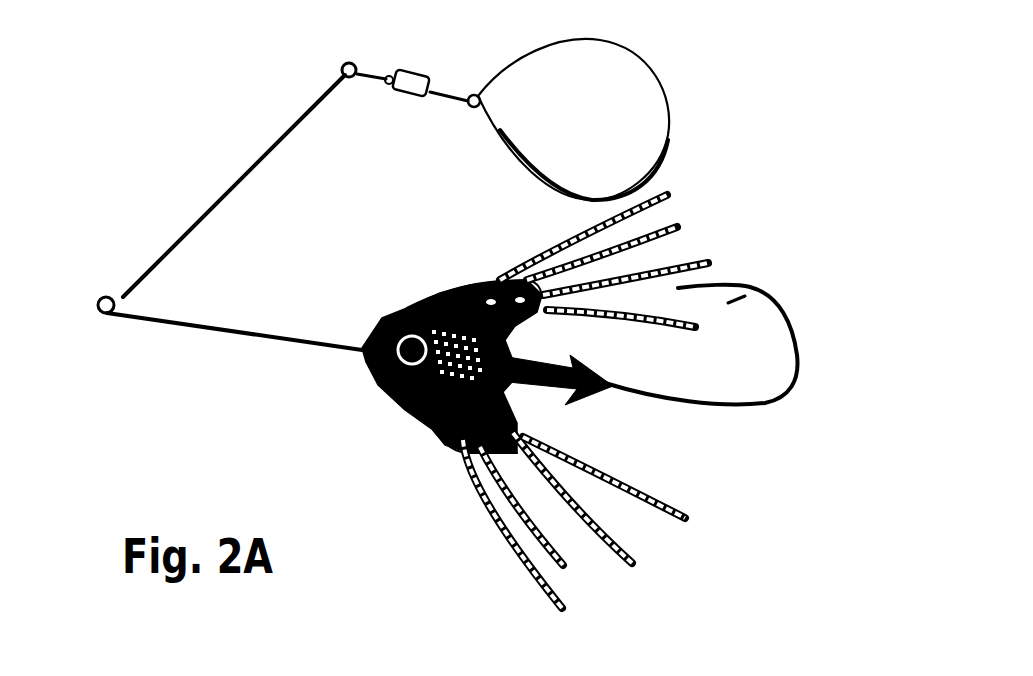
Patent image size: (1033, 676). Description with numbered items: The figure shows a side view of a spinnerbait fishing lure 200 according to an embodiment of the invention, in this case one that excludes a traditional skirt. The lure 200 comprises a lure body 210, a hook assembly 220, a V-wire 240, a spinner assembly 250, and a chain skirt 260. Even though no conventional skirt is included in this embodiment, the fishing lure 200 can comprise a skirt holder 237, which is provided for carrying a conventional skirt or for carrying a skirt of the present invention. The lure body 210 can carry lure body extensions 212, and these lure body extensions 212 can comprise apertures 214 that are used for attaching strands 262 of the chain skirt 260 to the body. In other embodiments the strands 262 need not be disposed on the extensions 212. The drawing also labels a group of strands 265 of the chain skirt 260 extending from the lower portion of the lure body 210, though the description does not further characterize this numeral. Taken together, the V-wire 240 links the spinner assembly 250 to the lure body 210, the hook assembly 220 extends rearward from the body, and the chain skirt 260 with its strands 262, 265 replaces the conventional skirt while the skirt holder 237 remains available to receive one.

The spinnerbait fishing lure 200 is at (46, 42).
The lure body 210 is at (392, 300).
The lure body extensions 212 is at (480, 288).
The apertures 214 is at (440, 430).
The hook assembly 220 is at (740, 297).
The skirt holder 237 is at (537, 390).
The V-wire 240 is at (237, 173).
The spinner assembly 250 is at (400, 140).
The chain skirt 260 is at (437, 514).
The strands 262 is at (680, 262).
The lower skirt strands 265 is at (623, 553).